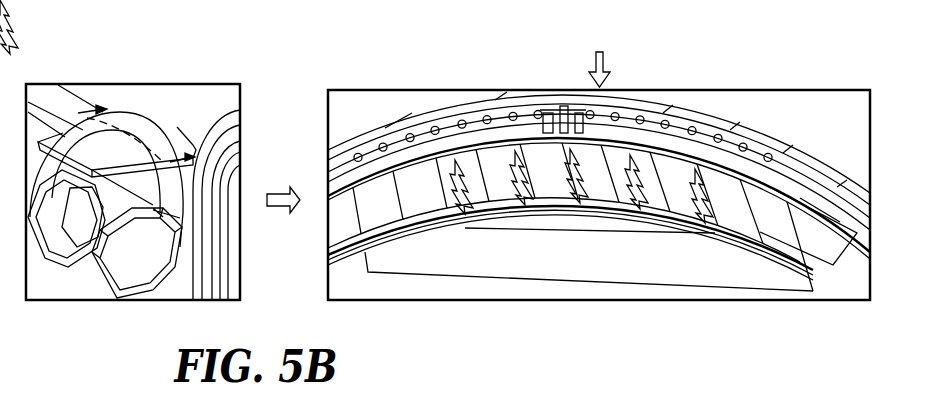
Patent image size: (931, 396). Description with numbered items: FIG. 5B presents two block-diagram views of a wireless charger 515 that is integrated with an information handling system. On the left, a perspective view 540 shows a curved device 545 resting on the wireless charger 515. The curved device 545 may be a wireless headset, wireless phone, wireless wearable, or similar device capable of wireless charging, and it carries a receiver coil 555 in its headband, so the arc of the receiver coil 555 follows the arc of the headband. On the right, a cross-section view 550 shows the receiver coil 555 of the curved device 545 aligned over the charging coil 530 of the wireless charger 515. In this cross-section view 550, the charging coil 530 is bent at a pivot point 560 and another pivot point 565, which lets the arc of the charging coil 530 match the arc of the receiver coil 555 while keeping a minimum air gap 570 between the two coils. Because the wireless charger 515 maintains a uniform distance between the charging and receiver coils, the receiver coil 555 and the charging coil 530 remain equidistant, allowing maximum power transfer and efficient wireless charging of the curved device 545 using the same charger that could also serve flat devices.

The wireless charger 515 is at (108, 165).
The charging coil 530 is at (702, 223).
The perspective view 540 is at (28, 303).
The curved device 545 is at (133, 128).
The cross-section view 550 is at (818, 302).
The receiver coil 555 is at (623, 139).
The pivot point 560 is at (453, 225).
The pivot point 565 is at (717, 238).
The air gap 570 is at (597, 183).